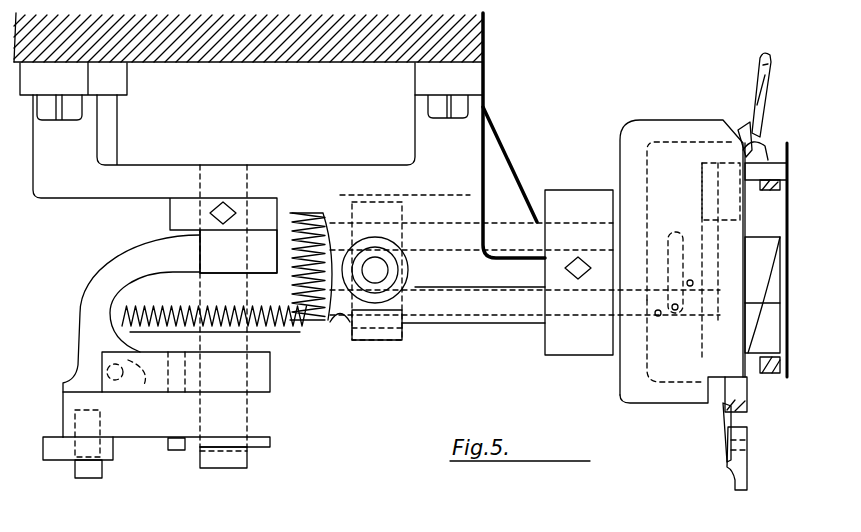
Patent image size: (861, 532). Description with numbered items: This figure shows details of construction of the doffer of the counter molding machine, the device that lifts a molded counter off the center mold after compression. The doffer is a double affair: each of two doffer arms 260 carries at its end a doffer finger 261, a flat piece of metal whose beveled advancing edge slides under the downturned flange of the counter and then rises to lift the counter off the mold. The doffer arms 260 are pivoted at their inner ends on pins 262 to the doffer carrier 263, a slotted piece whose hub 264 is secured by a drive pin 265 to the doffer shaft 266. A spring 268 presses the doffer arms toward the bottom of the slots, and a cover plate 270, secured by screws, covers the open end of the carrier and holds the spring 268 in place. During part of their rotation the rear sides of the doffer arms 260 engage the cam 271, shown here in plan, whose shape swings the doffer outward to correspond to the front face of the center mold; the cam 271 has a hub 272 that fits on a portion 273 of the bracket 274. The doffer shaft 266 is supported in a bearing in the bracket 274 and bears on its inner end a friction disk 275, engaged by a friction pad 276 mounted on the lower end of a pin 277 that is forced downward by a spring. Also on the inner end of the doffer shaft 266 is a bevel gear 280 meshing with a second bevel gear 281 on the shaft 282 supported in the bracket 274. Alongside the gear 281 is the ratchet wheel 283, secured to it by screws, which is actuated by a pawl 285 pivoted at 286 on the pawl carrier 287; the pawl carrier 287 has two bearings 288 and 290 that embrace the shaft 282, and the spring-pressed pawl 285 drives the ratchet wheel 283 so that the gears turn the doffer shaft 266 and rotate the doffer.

The doffer arm 260 is at (760, 66).
The doffer finger 261 is at (750, 122).
The pin 262 is at (735, 258).
The doffer carrier 263 is at (762, 374).
The hub 264 is at (632, 347).
The drive pin 265 is at (660, 318).
The doffer shaft 266 is at (503, 292).
The spring 268 is at (735, 340).
The cover plate 270 is at (800, 175).
The cam 271 is at (730, 133).
The hub 272 is at (598, 192).
The portion of the bracket 273 is at (557, 222).
The bracket 274 is at (482, 207).
The friction disk 275 is at (397, 343).
The friction pad 276 is at (381, 342).
The pin 277 is at (378, 268).
The bevel gear 280 is at (323, 220).
The second bevel gear 281 is at (305, 343).
The shaft 282 is at (243, 457).
The ratchet wheel 283 is at (282, 380).
The pawl 285 is at (132, 345).
The pawl pivot 286 is at (167, 403).
The pawl carrier 287 is at (140, 430).
The bearing 288 is at (263, 418).
The bearing 290 is at (270, 246).